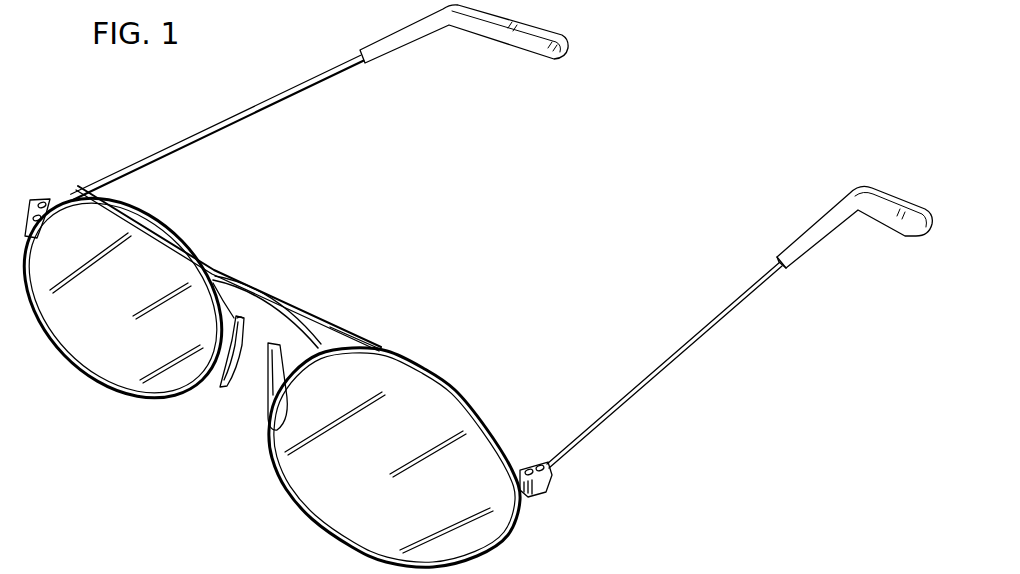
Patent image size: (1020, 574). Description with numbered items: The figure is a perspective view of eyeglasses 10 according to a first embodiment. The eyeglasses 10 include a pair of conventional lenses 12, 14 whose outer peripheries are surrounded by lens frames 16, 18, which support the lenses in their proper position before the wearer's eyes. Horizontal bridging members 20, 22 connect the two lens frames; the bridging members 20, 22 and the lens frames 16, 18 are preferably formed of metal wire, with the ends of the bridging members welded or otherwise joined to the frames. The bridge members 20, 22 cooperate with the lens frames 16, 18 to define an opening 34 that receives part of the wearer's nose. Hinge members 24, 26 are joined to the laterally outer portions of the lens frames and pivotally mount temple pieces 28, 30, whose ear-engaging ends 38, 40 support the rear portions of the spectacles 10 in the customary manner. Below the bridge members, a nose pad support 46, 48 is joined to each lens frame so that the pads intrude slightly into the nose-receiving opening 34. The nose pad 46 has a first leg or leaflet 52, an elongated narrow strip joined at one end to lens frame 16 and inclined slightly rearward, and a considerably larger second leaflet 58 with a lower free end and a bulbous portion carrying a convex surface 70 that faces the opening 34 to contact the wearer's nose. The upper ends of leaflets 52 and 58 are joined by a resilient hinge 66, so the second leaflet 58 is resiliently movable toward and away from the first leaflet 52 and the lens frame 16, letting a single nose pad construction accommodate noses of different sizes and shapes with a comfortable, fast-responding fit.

The eyeglasses 10 is at (648, 212).
The lens 12 is at (113, 352).
The lens 14 is at (313, 497).
The lens frame 16 is at (168, 392).
The lens frame 18 is at (503, 545).
The horizontal bridging member 20 is at (225, 262).
The horizontal bridging member 22 is at (340, 330).
The hinge member 24 is at (27, 200).
The hinge member 26 is at (540, 492).
The temple piece 28 is at (637, 393).
The temple piece 30 is at (252, 117).
The opening 34 is at (272, 317).
The ear-engaging end 38 is at (885, 220).
The ear-engaging end 40 is at (491, 27).
The nose pad support 46 is at (215, 395).
The nose pad support 48 is at (291, 390).
The first leaflet 52 is at (231, 335).
The second leaflet 58 is at (244, 330).
The resilient hinge 66 is at (232, 296).
The convex surface 70 is at (240, 378).